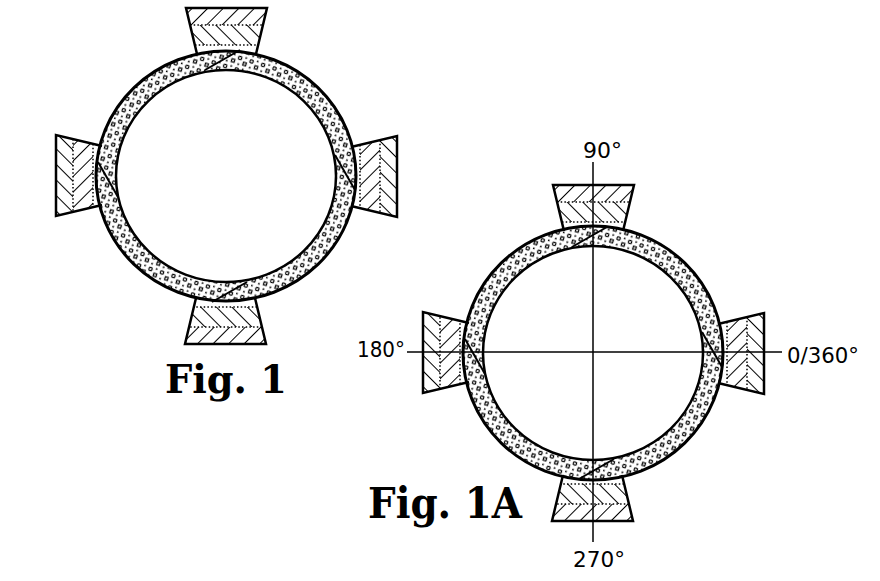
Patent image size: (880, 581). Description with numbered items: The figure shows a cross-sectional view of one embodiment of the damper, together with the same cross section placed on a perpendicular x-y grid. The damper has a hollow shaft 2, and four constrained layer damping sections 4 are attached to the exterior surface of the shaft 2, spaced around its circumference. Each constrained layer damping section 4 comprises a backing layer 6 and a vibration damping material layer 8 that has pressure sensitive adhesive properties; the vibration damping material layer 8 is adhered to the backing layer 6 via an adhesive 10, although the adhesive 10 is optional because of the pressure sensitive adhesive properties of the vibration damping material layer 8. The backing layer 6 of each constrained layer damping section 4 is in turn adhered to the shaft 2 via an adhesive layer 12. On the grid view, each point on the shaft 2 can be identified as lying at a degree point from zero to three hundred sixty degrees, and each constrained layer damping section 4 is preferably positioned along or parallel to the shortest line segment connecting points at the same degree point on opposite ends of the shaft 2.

The hollow shaft 2 is at (133, 262).
The constrained layer damping section 4 is at (65, 172).
The backing layer 6 is at (82, 210).
The vibration damping material layer 8 is at (53, 181).
The adhesive 10 is at (57, 205).
The adhesive layer 12 is at (97, 148).